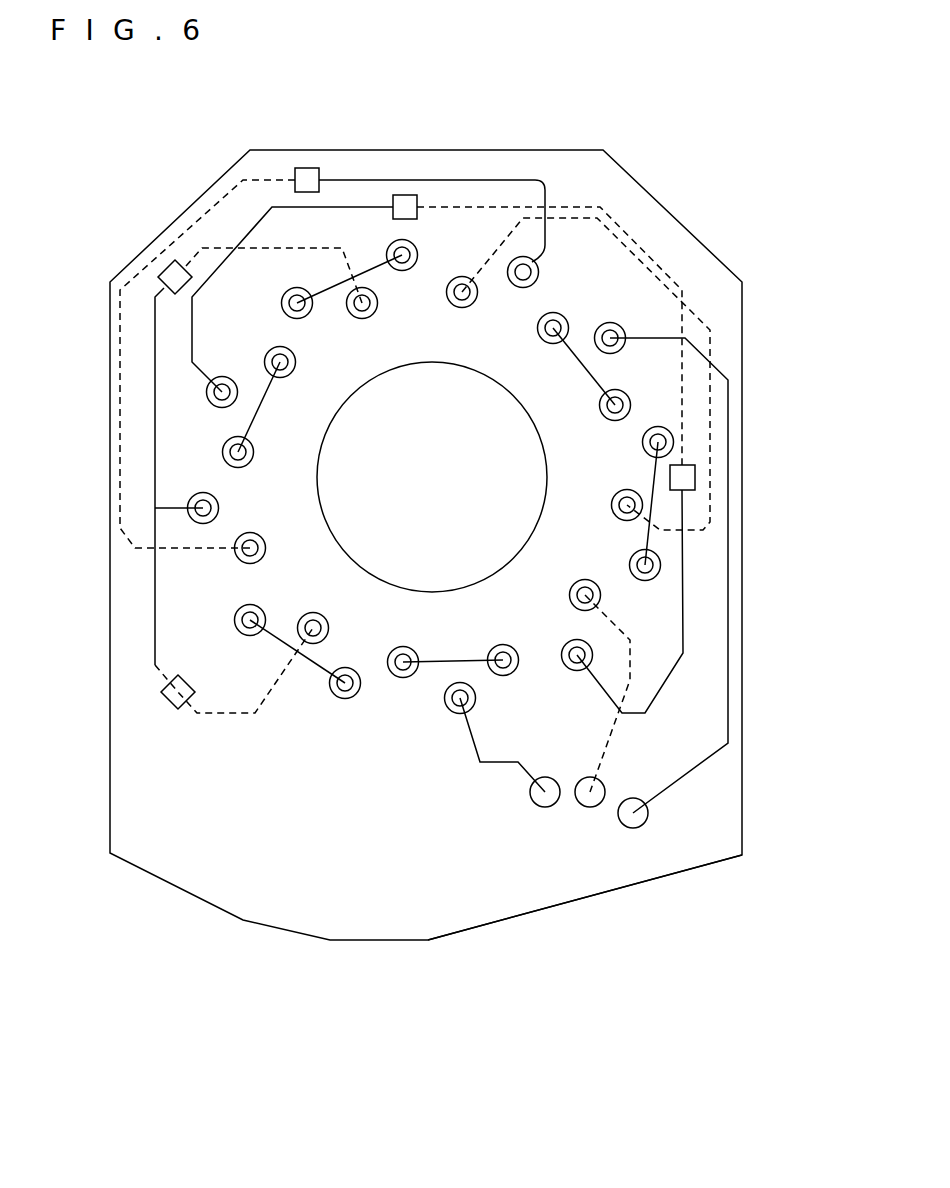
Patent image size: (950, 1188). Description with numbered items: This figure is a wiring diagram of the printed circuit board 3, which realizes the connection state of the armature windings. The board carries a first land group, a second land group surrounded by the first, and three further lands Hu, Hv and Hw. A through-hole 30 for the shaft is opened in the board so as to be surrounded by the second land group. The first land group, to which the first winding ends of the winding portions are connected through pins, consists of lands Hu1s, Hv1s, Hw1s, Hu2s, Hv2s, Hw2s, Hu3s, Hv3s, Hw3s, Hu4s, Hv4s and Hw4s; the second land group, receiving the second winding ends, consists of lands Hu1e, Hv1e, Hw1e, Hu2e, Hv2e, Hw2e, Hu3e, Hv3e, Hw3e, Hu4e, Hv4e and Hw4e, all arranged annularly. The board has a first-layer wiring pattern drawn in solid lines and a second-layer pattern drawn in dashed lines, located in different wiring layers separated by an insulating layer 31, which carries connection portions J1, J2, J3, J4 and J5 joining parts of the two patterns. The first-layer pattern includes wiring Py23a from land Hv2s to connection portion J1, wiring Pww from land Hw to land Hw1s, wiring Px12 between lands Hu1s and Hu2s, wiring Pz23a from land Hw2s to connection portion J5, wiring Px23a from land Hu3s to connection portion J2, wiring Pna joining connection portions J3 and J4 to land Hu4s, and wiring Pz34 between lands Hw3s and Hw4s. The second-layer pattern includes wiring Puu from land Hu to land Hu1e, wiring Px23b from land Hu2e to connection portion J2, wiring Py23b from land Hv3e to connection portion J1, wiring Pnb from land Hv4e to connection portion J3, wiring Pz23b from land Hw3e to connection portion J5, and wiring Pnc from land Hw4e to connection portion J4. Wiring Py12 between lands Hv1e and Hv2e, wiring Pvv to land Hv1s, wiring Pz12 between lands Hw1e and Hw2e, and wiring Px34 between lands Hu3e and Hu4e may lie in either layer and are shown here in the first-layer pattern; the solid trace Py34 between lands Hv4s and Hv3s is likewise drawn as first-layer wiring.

The printed circuit board 3 is at (360, 948).
The insulating layer 31 is at (527, 898).
The through-hole 30 is at (333, 513).
The connection portion J1 is at (695, 476).
The connection portion J2 is at (410, 195).
The connection portion J3 is at (163, 265).
The connection portion J4 is at (165, 690).
The connection portion J5 is at (307, 168).
The wiring Px12 is at (650, 537).
The wiring Py12 is at (438, 664).
The wiring Pz12 is at (598, 382).
The wiring Px34 is at (262, 385).
The wiring Py34 is at (377, 266).
The wiring Pz34 is at (300, 655).
The wiring Px23a is at (270, 205).
The wiring Py23a is at (683, 650).
The wiring Pz23a is at (537, 178).
The wiring Px23b is at (616, 210).
The wiring Py23b is at (668, 286).
The wiring Pz23b is at (120, 490).
The wiring Pna is at (155, 310).
The wiring Pnb is at (222, 243).
The wiring Pnc is at (190, 718).
The wiring Puu is at (610, 740).
The wiring Pvv is at (492, 767).
The wiring Pww is at (683, 787).
The land Hu is at (586, 807).
The land Hv is at (535, 806).
The land Hw is at (631, 828).
The land Hu1s is at (645, 582).
The land Hu1e is at (583, 580).
The land Hu2s is at (645, 452).
The land Hu2e is at (612, 505).
The land Hu3s is at (212, 405).
The land Hu3e is at (282, 378).
The land Hu4s is at (203, 493).
The land Hu4e is at (252, 462).
The land Hv1s is at (452, 712).
The land Hv1e is at (403, 647).
The land Hv2s is at (572, 670).
The land Hv2e is at (505, 645).
The land Hv3s is at (412, 247).
The land Hv3e is at (458, 308).
The land Hv4s is at (285, 296).
The land Hv4e is at (360, 318).
The land Hw1s is at (612, 352).
The land Hw1e is at (608, 418).
The land Hw2s is at (538, 272).
The land Hw2e is at (545, 342).
The land Hw3s is at (240, 635).
The land Hw3e is at (240, 560).
The land Hw4s is at (343, 700).
The land Hw4e is at (325, 615).